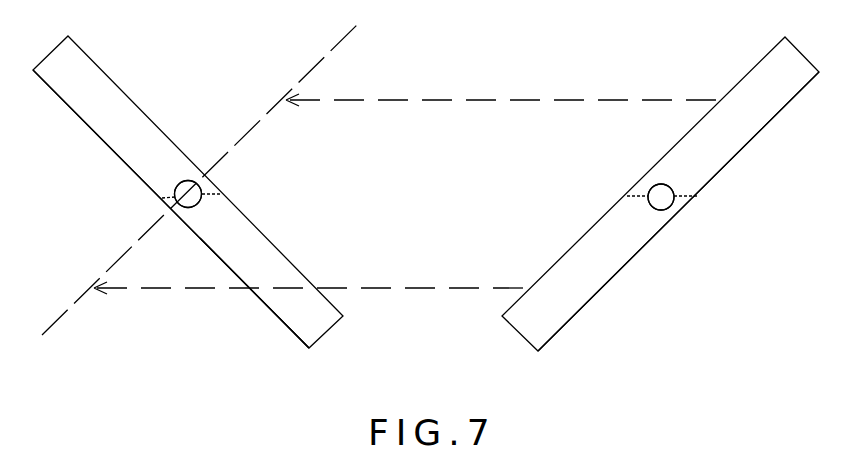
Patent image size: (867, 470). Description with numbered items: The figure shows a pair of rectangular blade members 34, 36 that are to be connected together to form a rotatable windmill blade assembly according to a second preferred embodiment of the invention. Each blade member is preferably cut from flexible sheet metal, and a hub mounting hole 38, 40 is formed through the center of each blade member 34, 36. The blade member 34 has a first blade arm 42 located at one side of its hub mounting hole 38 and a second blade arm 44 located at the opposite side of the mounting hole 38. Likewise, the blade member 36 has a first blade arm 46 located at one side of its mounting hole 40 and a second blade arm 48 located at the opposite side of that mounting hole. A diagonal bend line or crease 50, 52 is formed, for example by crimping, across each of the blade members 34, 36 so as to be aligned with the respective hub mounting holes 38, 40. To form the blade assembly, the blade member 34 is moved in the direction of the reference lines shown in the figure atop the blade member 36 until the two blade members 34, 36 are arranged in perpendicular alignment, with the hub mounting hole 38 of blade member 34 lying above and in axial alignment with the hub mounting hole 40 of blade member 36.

The rectangular blade member 34 is at (759, 60).
The rectangular blade member 36 is at (93, 62).
The hub mounting hole 38 is at (659, 193).
The hub mounting hole 40 is at (183, 202).
The first blade arm 42 is at (773, 97).
The second blade arm 44 is at (560, 310).
The first blade arm 46 is at (73, 87).
The second blade arm 48 is at (292, 312).
The diagonal bend line or crease 50 is at (685, 208).
The diagonal bend line or crease 52 is at (177, 188).